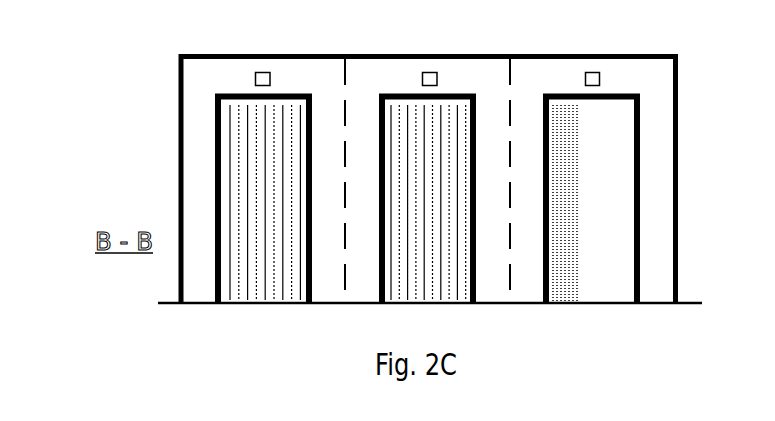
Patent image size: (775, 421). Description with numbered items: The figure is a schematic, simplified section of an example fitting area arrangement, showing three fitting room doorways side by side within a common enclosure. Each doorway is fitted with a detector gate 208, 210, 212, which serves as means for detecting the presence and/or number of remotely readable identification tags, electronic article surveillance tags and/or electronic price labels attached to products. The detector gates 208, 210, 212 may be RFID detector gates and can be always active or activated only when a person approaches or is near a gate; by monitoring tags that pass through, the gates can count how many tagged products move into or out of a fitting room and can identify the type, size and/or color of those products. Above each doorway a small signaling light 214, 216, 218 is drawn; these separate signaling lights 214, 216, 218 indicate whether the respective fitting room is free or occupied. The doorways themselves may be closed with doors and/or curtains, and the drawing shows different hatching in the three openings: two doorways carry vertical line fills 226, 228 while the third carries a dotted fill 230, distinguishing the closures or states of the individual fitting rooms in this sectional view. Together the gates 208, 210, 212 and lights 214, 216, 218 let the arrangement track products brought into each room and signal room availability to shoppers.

The detector gate 208 is at (290, 97).
The detector gate 210 is at (455, 97).
The detector gate 212 is at (617, 97).
The signaling light 214 is at (265, 80).
The signaling light 216 is at (430, 80).
The signaling light 218 is at (585, 75).
The first color conversion layer 226 is at (243, 193).
The second color conversion layer 228 is at (429, 288).
The light scattering layer 230 is at (570, 172).